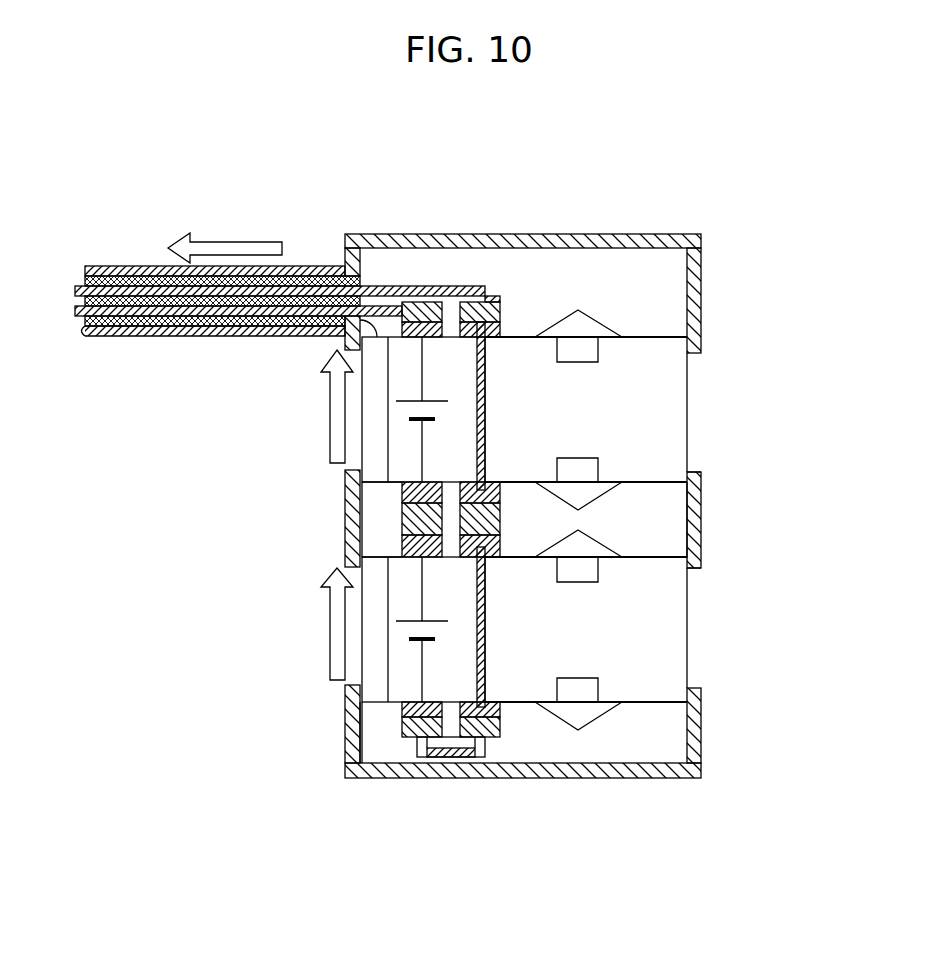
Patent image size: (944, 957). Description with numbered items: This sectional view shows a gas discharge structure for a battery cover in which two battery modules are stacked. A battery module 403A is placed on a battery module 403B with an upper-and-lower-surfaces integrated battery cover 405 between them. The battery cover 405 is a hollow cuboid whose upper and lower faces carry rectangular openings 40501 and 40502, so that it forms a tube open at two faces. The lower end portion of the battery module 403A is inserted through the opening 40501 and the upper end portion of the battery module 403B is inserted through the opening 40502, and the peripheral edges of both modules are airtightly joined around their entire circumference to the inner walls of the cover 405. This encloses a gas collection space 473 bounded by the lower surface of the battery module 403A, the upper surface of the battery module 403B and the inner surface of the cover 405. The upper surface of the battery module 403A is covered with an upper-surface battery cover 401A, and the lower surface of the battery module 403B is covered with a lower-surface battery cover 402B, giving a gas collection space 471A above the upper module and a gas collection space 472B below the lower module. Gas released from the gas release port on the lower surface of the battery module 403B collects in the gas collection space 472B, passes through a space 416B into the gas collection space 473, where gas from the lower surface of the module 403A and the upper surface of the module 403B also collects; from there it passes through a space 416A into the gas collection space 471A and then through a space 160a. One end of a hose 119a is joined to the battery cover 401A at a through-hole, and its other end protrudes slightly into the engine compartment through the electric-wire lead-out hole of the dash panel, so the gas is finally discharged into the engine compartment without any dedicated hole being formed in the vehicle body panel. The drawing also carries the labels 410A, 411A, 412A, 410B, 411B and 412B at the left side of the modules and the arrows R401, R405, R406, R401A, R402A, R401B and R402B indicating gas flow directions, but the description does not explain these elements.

The upper-surface battery cover 401A is at (641, 240).
The lower-surface battery cover 402B is at (655, 770).
The gas collection space 471A is at (523, 266).
The gas collection space 472B is at (535, 750).
The battery module 403A is at (668, 412).
The battery module 403B is at (668, 634).
The upper-and-lower-surfaces integrated battery cover 405 is at (687, 500).
The opening 40501 is at (690, 466).
The opening 40502 is at (689, 574).
The gas collection space 473 is at (687, 540).
The hose 119a is at (322, 268).
The space 160a is at (155, 322).
The cable direction R401 is at (225, 236).
The upper left wall portion 411A is at (348, 343).
The upper electrode unit 410A is at (360, 388).
The space 416A is at (372, 440).
The upper flow direction R405 is at (337, 422).
The upper spacer 412A is at (372, 493).
The lower left wall portion 411B is at (350, 542).
The lower electrode unit 410B is at (360, 606).
The space 416B is at (372, 655).
The lower flow direction R406 is at (337, 630).
The lower spacer 412B is at (372, 712).
The upper inflow direction R401A is at (578, 355).
The upper outflow direction R402A is at (578, 468).
The lower inflow direction R401B is at (578, 574).
The lower outflow direction R402B is at (578, 688).